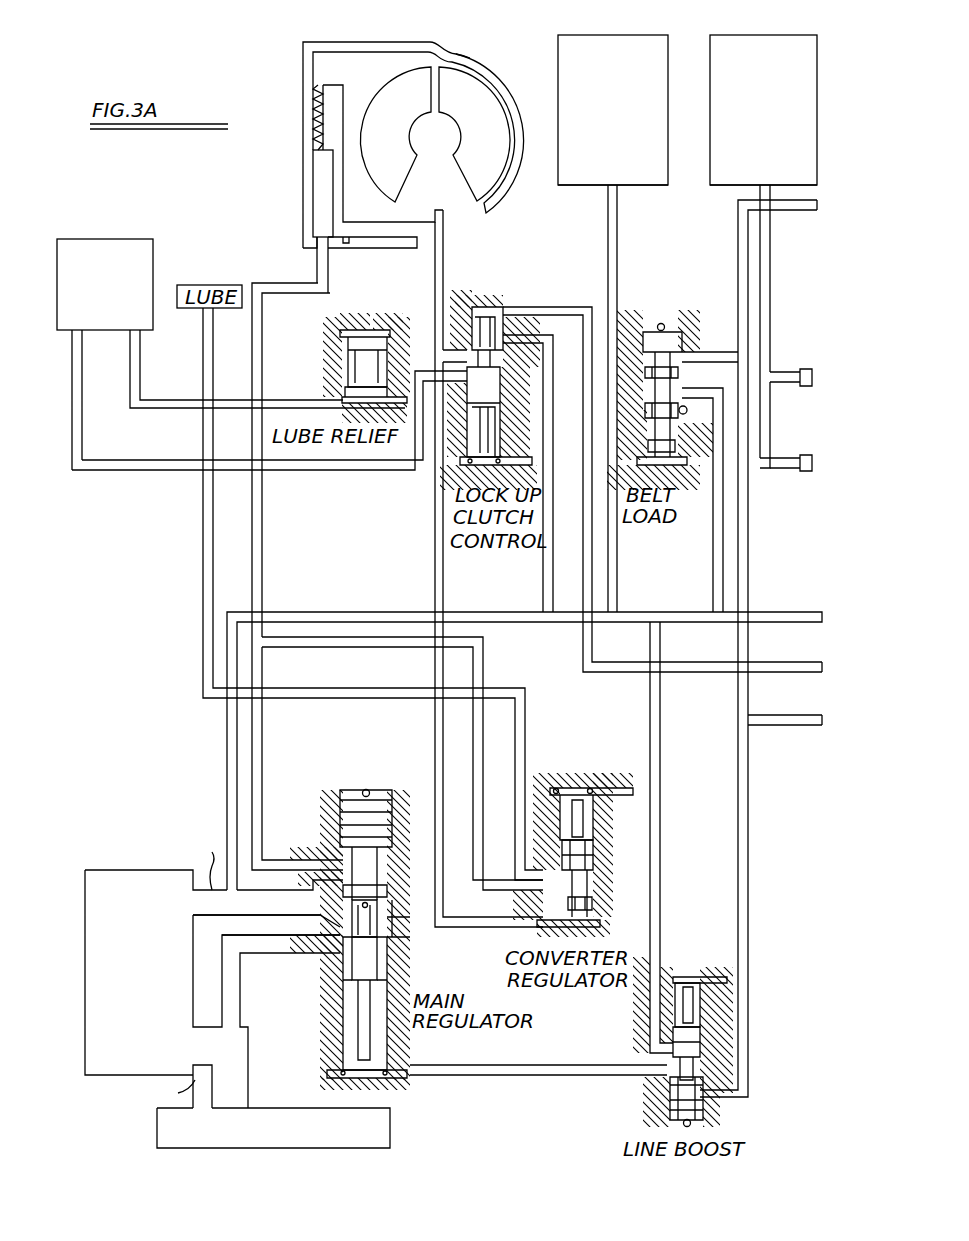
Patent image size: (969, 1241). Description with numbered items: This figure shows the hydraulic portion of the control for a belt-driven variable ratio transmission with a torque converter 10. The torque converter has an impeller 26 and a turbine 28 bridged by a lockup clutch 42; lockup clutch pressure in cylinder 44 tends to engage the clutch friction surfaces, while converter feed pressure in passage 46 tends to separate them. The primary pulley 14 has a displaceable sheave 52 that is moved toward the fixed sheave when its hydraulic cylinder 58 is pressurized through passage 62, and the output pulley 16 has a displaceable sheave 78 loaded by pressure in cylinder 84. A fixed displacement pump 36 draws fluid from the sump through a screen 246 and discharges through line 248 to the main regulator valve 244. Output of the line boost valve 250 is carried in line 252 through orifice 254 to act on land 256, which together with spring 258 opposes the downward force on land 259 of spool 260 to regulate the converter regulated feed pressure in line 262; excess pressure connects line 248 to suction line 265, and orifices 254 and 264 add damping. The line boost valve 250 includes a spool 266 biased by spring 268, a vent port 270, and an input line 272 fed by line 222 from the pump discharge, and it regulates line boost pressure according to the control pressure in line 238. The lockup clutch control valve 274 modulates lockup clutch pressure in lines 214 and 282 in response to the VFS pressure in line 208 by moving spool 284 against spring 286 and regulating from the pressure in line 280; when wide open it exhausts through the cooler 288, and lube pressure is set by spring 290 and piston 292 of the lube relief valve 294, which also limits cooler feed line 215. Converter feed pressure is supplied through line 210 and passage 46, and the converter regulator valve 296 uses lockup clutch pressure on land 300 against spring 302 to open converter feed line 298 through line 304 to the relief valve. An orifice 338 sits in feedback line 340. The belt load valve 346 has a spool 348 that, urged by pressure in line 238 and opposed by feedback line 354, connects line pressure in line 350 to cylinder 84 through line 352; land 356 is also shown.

The torque converter 10 is at (480, 38).
The primary pulley 14 is at (770, 92).
The displaceable sheave 52 is at (757, 32).
The output pulley 16 is at (616, 92).
The displaceable sheave 78 is at (603, 32).
The impeller 26 is at (397, 141).
The turbine 28 is at (499, 141).
The pump 36 is at (88, 870).
The lockup clutch 42 is at (312, 104).
The cylinder 44 is at (359, 58).
The passage 46 is at (318, 197).
The hydraulic cylinder 58 is at (722, 188).
The passage 62 is at (770, 273).
The cylinder 84 is at (588, 188).
The line 208 is at (533, 307).
The line 210 is at (284, 283).
The line 214 is at (447, 246).
The cooler feed line 215 is at (352, 470).
The line 222 is at (326, 611).
The line 238 is at (786, 370).
The main regulator valve 244 is at (403, 925).
The screen 246 is at (395, 1132).
The line 248 is at (203, 915).
The line boost valve 250 is at (707, 1030).
The line 252 is at (518, 1063).
The orifice 254 is at (418, 1065).
The land 256 is at (340, 990).
The spring 258 is at (322, 1066).
The land 259 is at (398, 845).
The spool 260 is at (345, 950).
The line 262 is at (266, 728).
The orifice 264 is at (297, 860).
The suction line 265 is at (268, 957).
The spool 266 is at (700, 1070).
The spring 268 is at (698, 980).
The vent port 270 is at (713, 977).
The input line 272 is at (663, 782).
The lockup clutch control valve 274 is at (455, 438).
The line 280 is at (543, 559).
The line 282 is at (432, 715).
The spool 284 is at (497, 358).
The spring 286 is at (460, 466).
The cooler 288 is at (112, 238).
The spring 290 is at (365, 330).
The piston 292 is at (400, 358).
The lube relief valve 294 is at (343, 358).
The converter regulator valve 296 is at (600, 857).
The converter feed line 298 is at (487, 659).
The land 300 is at (593, 903).
The spring 302 is at (596, 786).
The converter feed line 304 is at (528, 710).
The orifice 338 is at (785, 472).
The feedback line 340 is at (760, 468).
The belt load valve 346 is at (683, 377).
The spool 348 is at (668, 393).
The line 350 is at (710, 551).
The line 352 is at (607, 248).
The feedback line 354 is at (605, 492).
The belt load valve land 356 is at (683, 416).